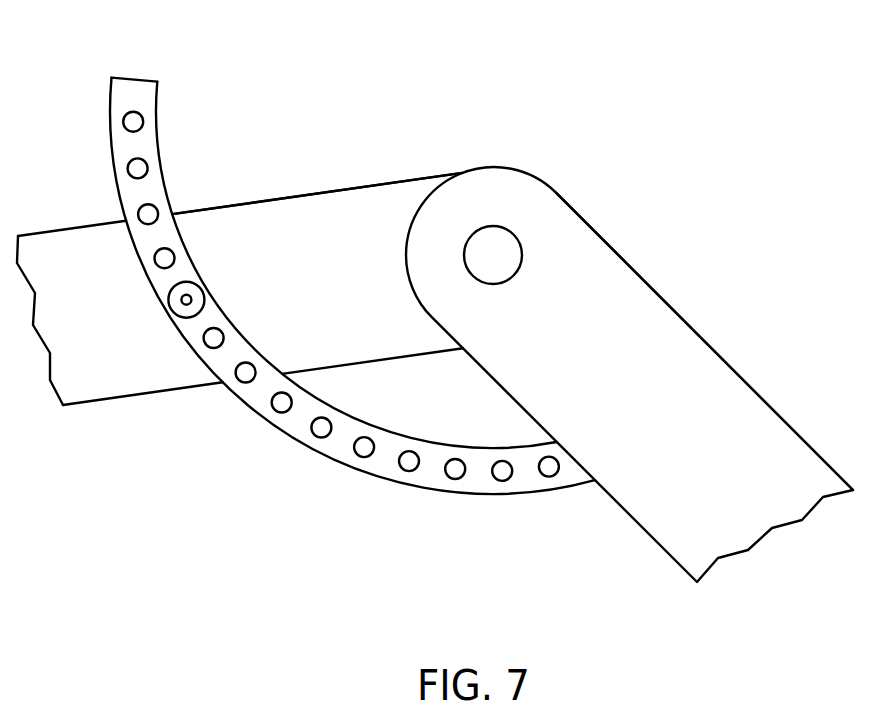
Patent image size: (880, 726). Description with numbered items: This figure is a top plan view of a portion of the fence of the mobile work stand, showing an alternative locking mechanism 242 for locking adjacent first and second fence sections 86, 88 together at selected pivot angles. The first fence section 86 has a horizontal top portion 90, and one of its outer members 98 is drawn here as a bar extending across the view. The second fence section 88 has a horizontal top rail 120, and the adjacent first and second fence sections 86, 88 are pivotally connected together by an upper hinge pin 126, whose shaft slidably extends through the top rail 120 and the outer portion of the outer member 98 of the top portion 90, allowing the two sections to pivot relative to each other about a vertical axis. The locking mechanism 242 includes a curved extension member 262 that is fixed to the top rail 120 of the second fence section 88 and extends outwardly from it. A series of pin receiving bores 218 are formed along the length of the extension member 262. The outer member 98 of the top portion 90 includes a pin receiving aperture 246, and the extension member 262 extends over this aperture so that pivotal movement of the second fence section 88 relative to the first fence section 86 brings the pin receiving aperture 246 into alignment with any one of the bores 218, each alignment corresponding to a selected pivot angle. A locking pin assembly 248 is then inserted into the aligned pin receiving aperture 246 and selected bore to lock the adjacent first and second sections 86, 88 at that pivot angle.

The first fence section 86 is at (240, 271).
The second fence section 88 is at (629, 374).
The top portion 90 is at (260, 210).
The outer member 98 is at (58, 228).
The top rail 120 is at (607, 264).
The upper hinge pin 126 is at (516, 273).
The adjustment holes 218 is at (124, 118).
The locking mechanism 242 is at (321, 330).
The pin receiving aperture 246 is at (191, 297).
The locking pin assembly 248 is at (168, 300).
The curved extension member 262 is at (321, 316).